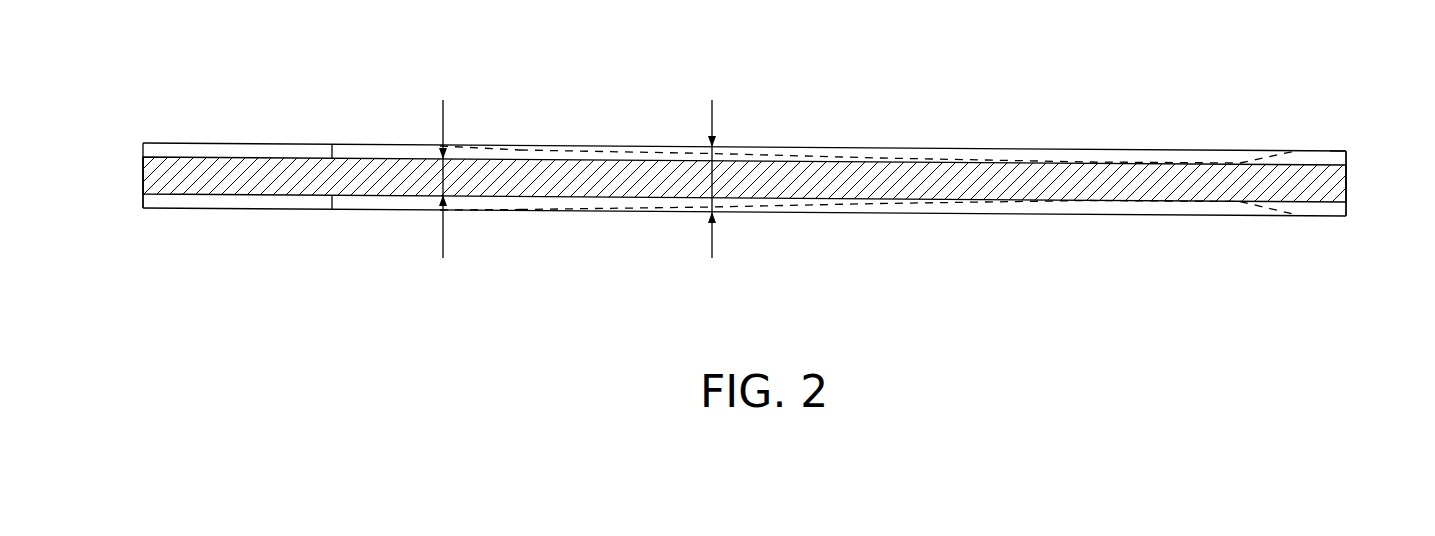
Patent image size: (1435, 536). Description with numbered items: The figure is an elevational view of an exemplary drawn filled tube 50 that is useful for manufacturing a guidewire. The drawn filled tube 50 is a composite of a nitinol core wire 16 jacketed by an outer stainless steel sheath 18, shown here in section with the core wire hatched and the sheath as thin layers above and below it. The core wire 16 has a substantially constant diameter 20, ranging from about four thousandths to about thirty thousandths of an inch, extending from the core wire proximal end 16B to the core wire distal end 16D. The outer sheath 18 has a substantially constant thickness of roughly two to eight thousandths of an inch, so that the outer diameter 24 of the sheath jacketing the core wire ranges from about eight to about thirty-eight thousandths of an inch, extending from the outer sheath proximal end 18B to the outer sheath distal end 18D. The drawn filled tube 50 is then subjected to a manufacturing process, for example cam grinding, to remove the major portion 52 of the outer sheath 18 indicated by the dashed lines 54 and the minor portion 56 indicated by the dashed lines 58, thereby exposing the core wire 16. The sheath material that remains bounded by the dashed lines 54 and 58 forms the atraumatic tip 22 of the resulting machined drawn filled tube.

The drawn filled tube 50 is at (963, 78).
The core wire 16 is at (614, 168).
The outer sheath 18 is at (375, 155).
The atraumatic tip 22 is at (1310, 207).
The core wire proximal end 16B is at (143, 173).
The outer sheath proximal end 18B is at (143, 201).
The core wire distal end 16D is at (1346, 186).
The outer sheath distal end 18D is at (1346, 157).
The diameter 20 is at (460, 177).
The outer diameter 24 is at (729, 181).
The major portion 52 is at (1128, 155).
The dashed lines 54 is at (793, 155).
The minor portion 56 is at (1341, 215).
The dashed lines 58 is at (1343, 147).